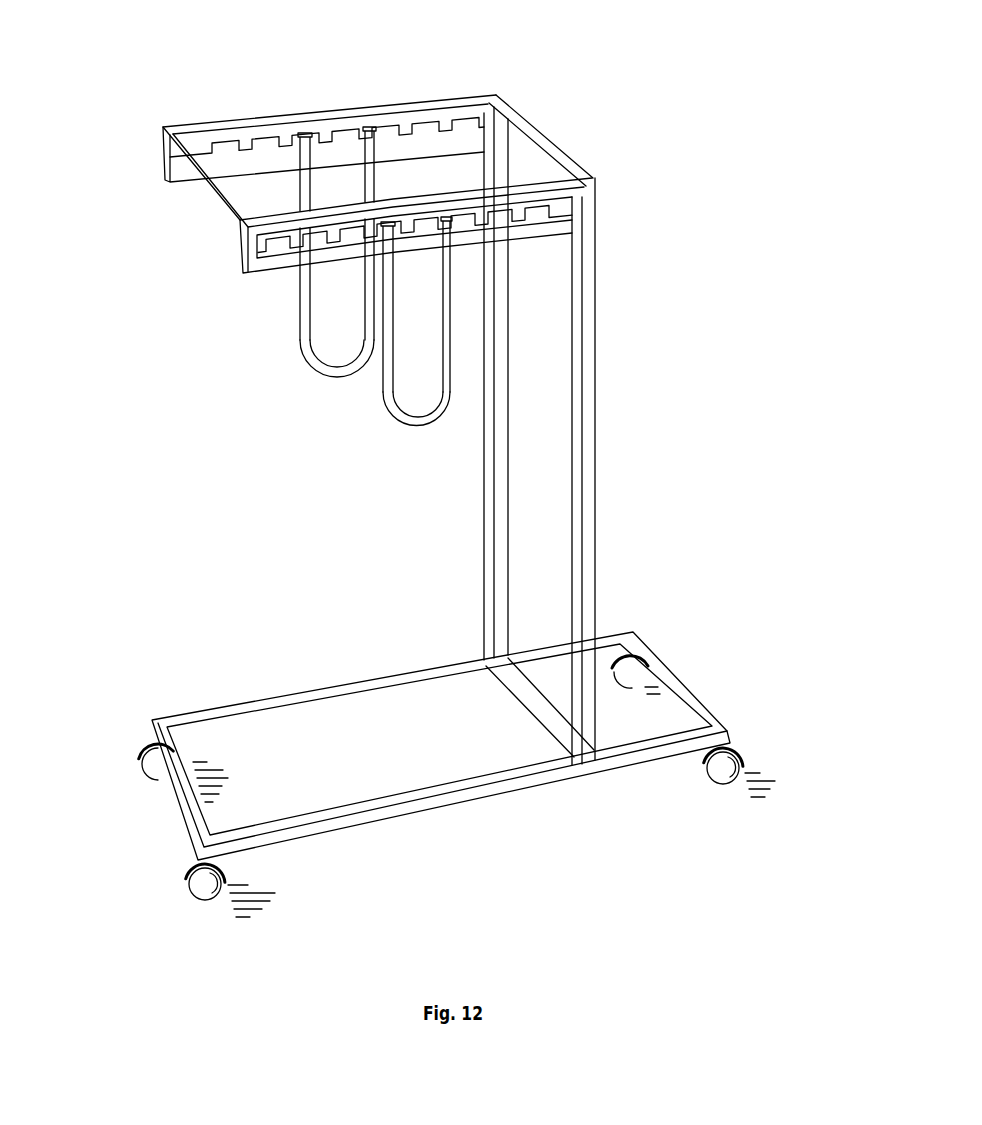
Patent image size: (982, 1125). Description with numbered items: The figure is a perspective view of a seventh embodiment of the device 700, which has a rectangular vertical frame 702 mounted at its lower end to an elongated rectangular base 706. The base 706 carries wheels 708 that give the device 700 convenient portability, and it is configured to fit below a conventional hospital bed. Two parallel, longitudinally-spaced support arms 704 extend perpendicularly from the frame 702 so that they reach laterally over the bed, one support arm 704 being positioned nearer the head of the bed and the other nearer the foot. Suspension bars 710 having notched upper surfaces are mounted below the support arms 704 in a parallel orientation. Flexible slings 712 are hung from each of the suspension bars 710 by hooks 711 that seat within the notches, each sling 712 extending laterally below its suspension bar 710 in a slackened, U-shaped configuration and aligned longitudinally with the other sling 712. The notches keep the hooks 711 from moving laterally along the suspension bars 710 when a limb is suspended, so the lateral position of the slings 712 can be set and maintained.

The device 700 is at (436, 465).
The rectangular vertical frame 702 is at (590, 440).
The support arms 704 is at (210, 132).
The elongated rectangular base 706 is at (488, 793).
The wheels 708 is at (723, 767).
The suspension bars 710 is at (232, 172).
The hooks 711 is at (366, 128).
The flexible slings 712 is at (393, 418).